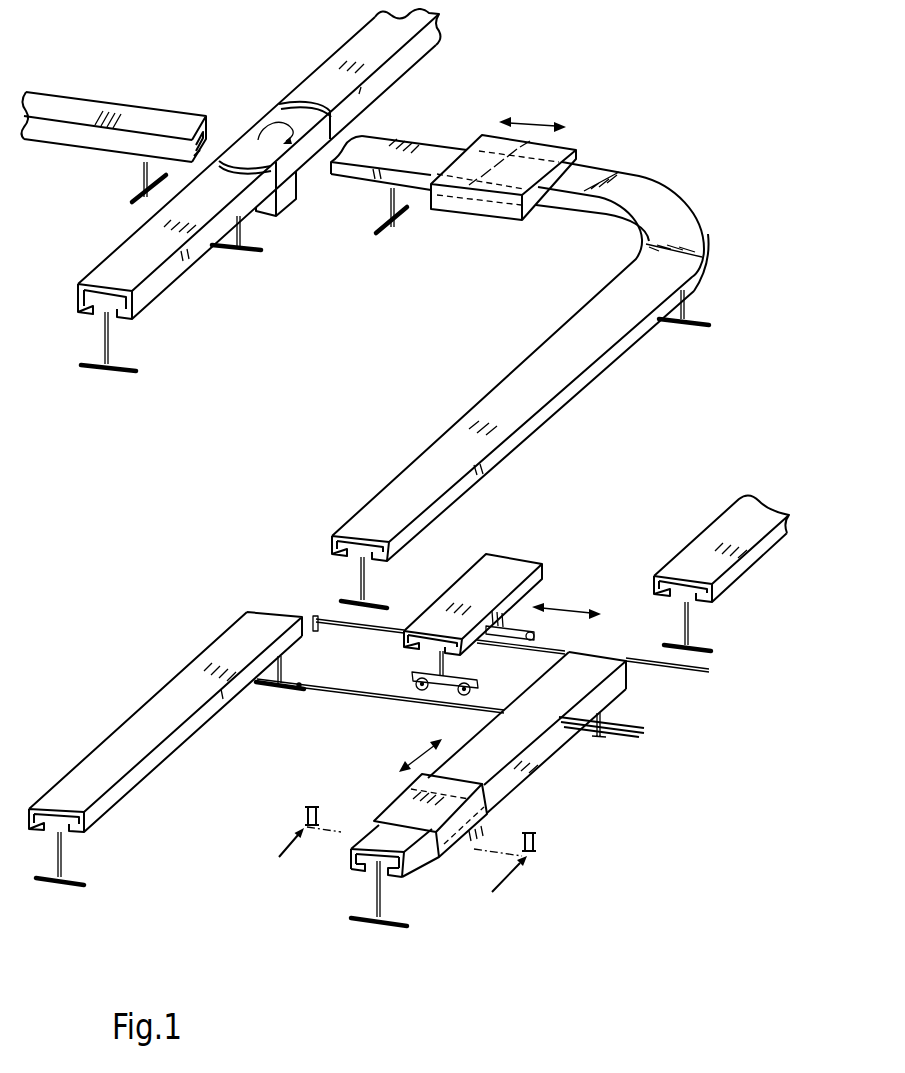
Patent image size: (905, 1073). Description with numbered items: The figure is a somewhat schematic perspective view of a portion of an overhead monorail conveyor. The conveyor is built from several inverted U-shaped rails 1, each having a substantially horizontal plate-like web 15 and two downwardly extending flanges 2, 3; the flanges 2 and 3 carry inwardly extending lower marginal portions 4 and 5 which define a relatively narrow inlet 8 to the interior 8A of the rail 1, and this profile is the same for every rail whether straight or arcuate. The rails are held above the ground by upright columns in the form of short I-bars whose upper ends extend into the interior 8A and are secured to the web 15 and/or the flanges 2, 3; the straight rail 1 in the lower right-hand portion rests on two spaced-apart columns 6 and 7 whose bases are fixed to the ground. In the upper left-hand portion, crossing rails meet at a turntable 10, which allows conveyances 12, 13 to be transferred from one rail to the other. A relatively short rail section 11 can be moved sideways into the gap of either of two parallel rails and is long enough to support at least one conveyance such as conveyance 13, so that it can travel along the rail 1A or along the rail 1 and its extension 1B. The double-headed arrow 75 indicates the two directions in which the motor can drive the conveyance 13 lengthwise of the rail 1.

The rail 1 is at (517, 791).
The rail 1A is at (260, 617).
The extension of rail 1B is at (676, 562).
The flange 2 is at (352, 860).
The flange 3 is at (413, 868).
The lower marginal portion 4 is at (362, 870).
The lower marginal portion 5 is at (405, 882).
The column 6 is at (598, 738).
The column 7 is at (380, 918).
The inlet 8 is at (370, 871).
The interior of the rail 8A is at (390, 860).
The turntable 10 is at (253, 127).
The rail section 11 is at (507, 570).
The conveyance 12 is at (487, 147).
The conveyance 13 is at (402, 808).
The web 15 is at (552, 712).
The double-headed arrow 75 is at (420, 752).